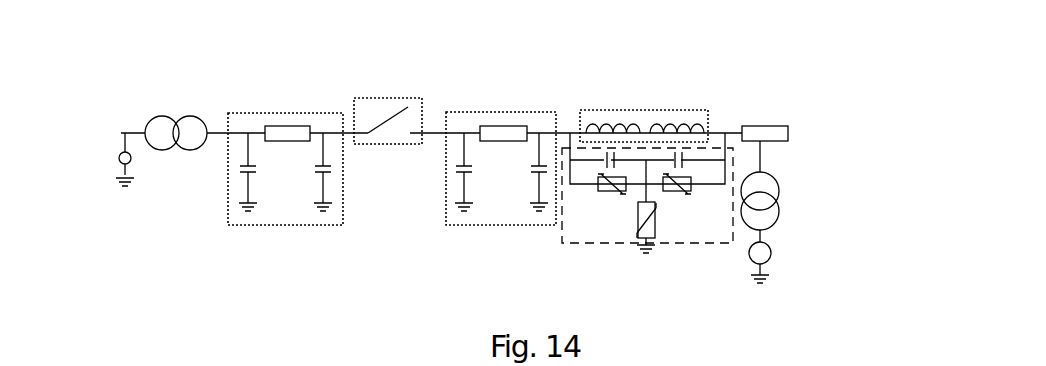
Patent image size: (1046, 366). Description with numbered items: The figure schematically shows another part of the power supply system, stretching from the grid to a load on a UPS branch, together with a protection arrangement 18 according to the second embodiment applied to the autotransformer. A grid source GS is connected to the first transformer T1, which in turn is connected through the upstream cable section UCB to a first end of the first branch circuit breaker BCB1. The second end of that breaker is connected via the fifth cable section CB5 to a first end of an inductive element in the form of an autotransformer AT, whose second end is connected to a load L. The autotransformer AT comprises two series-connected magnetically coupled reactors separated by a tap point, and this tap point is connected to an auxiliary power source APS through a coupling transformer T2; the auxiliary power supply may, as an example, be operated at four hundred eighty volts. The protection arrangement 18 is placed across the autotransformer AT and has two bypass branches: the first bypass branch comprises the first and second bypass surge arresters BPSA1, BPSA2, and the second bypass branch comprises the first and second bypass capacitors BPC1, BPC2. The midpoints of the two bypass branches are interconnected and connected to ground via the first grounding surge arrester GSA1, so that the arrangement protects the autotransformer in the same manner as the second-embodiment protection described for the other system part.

The grid source GS is at (115, 153).
The first transformer T1 is at (176, 120).
The upstream cable section UCB is at (285, 149).
The first branch circuit breaker BCB1 is at (388, 103).
The fifth cable section CB5 is at (501, 153).
The protection arrangement 18 is at (558, 152).
The autotransformer AT is at (644, 108).
The load L is at (765, 120).
The first bypass capacitor BPC1 is at (608, 165).
The second bypass capacitor BPC2 is at (683, 160).
The first bypass surge arrester BPSA1 is at (605, 192).
The second bypass surge arrester BPSA2 is at (683, 192).
The first grounding surge arrester GSA1 is at (657, 252).
The coupling transformer T2 is at (779, 191).
The auxiliary power source APS is at (795, 262).